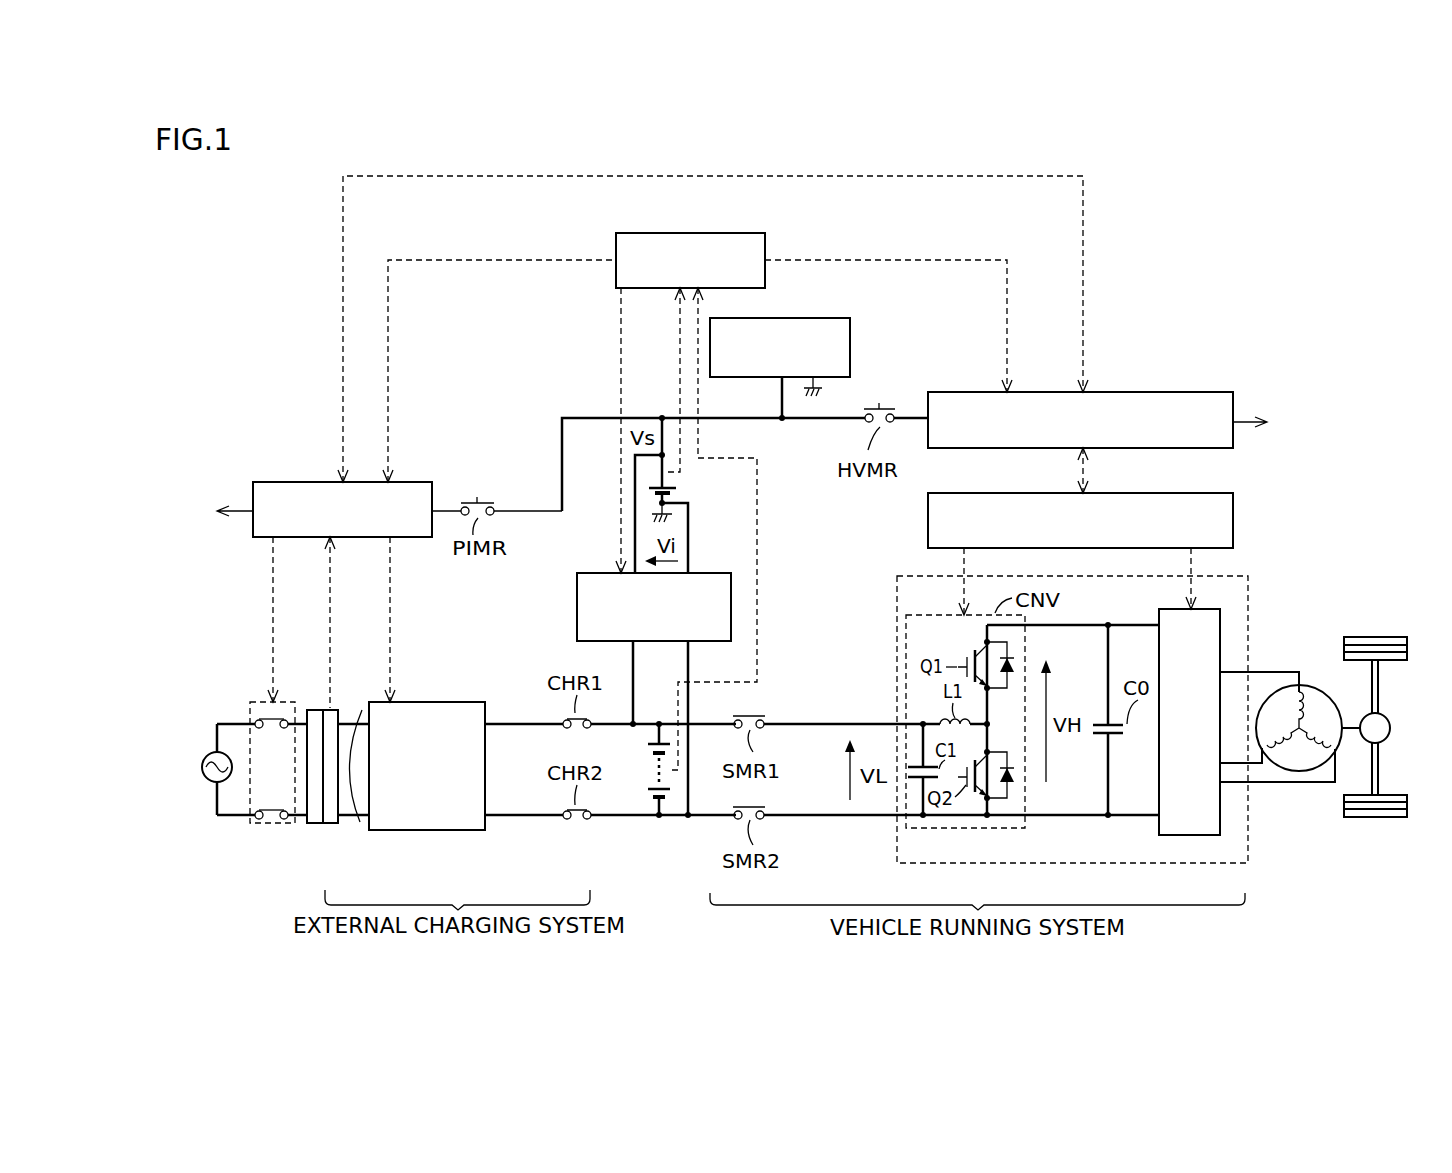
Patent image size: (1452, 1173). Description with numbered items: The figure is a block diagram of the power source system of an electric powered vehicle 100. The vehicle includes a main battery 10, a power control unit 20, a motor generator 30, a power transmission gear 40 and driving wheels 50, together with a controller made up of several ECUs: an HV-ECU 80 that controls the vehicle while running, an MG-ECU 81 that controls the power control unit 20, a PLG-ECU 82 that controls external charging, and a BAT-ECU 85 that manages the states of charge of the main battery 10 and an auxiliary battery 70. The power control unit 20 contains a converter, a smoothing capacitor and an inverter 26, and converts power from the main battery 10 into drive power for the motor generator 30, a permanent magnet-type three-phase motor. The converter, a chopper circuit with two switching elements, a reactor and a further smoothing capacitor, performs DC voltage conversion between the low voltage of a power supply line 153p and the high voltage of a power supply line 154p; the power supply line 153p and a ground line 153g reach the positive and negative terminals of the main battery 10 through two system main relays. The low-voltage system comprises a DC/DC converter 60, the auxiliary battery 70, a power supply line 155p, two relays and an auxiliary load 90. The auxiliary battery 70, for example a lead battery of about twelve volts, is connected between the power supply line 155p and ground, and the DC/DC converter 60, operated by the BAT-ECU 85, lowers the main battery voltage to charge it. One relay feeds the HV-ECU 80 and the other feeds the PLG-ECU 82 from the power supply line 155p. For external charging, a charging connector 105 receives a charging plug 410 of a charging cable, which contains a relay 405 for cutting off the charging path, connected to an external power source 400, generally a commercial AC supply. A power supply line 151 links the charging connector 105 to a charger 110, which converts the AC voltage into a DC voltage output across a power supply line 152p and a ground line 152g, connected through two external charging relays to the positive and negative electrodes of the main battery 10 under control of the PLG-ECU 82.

The electric powered vehicle 100 is at (1165, 162).
The BAT-ECU 85 is at (732, 233).
The auxiliary load 90 is at (817, 318).
The HV-ECU 80 is at (1194, 392).
The MG-ECU 81 is at (1194, 493).
The PLG-ECU 82 is at (412, 482).
The auxiliary battery 70 is at (677, 490).
The DC/DC converter 60 is at (702, 573).
The power supply line 155p is at (558, 428).
The external power source 400 is at (202, 766).
The relay 405 is at (258, 823).
The charging plug 410 is at (312, 823).
The charging connector 105 is at (332, 823).
The power supply line 151 is at (360, 712).
The charger 110 is at (412, 830).
The power supply line 152p is at (510, 728).
The ground line 152g is at (510, 818).
The main battery 10 is at (653, 768).
The power supply line 153p is at (813, 730).
The ground line 153g is at (818, 820).
The power supply line 154p is at (1138, 623).
The power control unit 20 is at (1250, 843).
The inverter 26 is at (1200, 609).
The motor generator 30 is at (1316, 687).
The power transmission gear 40 is at (1391, 718).
The driving wheels 50 is at (1388, 637).